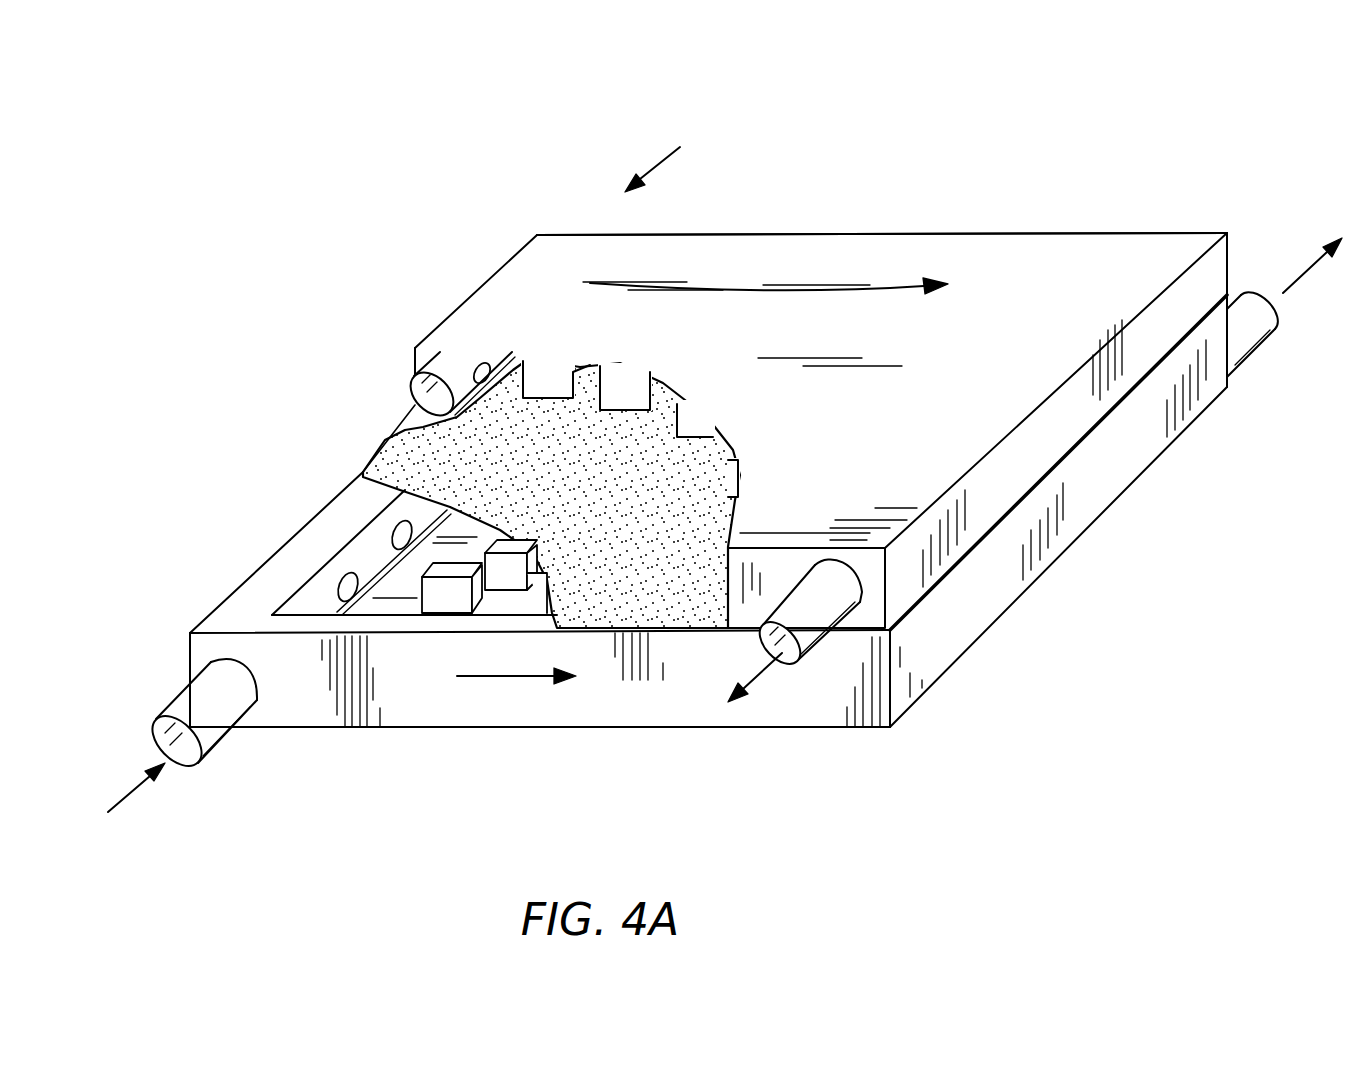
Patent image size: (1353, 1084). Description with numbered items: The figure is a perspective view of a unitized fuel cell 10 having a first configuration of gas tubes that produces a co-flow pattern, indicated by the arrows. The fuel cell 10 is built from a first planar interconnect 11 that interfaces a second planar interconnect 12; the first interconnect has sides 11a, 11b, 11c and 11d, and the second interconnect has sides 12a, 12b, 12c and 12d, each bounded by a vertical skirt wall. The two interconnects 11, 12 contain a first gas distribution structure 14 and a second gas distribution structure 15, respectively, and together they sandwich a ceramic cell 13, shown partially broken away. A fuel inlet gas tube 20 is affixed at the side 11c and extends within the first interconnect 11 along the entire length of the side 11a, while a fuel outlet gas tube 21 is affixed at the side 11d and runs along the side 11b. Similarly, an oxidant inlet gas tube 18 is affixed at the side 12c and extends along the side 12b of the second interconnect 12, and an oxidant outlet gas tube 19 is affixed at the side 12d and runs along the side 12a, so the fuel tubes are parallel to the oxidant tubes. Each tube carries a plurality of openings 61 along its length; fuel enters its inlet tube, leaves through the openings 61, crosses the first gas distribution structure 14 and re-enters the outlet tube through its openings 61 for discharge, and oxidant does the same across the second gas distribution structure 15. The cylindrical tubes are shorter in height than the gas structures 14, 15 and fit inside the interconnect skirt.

The fuel cell 10 is at (1209, 139).
The first planar interconnect 11 is at (1073, 556).
The side of first interconnect 11a is at (233, 598).
The side of first interconnect 11b is at (1130, 472).
The side of first interconnect 11c is at (625, 716).
The side of first interconnect 11d is at (1028, 212).
The second planar interconnect 12 is at (847, 234).
The side of second interconnect 12a is at (437, 327).
The side of second interconnect 12b is at (1068, 398).
The side of second interconnect 12c is at (745, 597).
The side of second interconnect 12d is at (727, 233).
The ceramic cell 13 is at (382, 455).
The first gas distribution structure 14 is at (435, 605).
The second gas distribution structure 15 is at (400, 425).
The oxidant inlet gas tube 18 is at (577, 212).
The oxidant outlet gas tube 19 is at (818, 663).
The fuel inlet gas tube 20 is at (180, 708).
The fuel outlet gas tube 21 is at (1268, 345).
The openings 61 is at (350, 552).